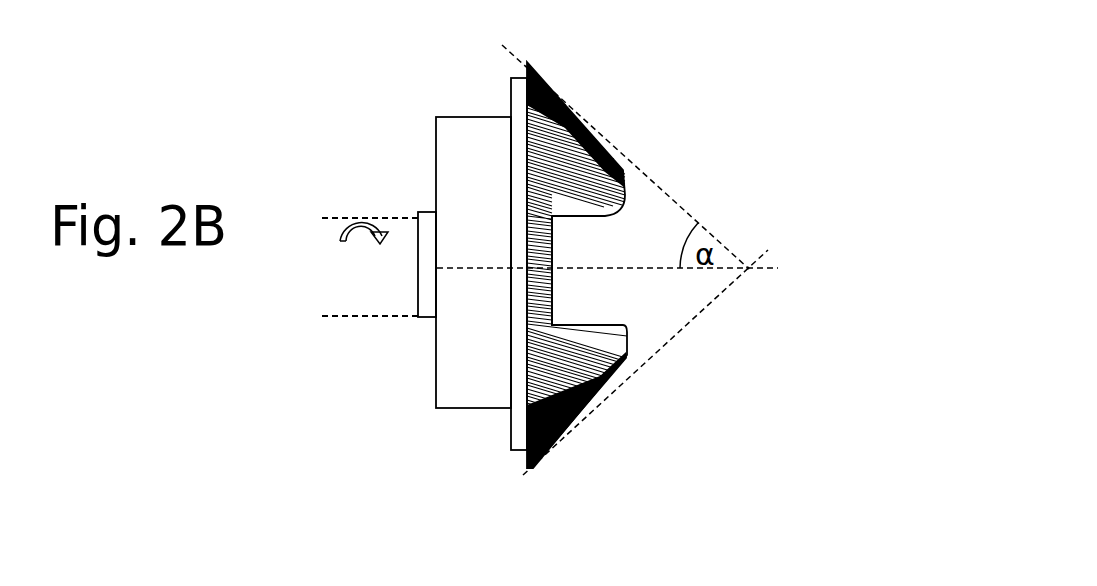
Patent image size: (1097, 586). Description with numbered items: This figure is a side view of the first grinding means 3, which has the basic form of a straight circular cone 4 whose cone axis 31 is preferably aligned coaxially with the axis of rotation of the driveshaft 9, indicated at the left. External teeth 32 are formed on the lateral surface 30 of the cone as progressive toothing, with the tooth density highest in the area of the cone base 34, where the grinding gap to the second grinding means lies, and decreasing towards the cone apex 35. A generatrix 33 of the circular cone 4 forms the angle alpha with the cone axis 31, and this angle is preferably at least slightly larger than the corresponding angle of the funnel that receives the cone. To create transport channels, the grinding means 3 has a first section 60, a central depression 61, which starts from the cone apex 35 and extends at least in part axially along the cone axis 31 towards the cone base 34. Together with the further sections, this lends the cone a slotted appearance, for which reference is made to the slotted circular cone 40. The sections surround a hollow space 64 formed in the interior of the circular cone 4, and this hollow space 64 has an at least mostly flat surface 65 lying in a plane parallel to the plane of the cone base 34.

The first grinding means 3 is at (414, 317).
The straight circular cone 4 is at (414, 317).
The slotted circular cone 40 is at (441, 455).
The driveshaft 9 is at (367, 297).
The flat surface 65 is at (520, 298).
The lateral surface 30 is at (641, 268).
The external teeth 32 is at (600, 387).
The hollow space 64 is at (585, 248).
The first section 60 is at (664, 209).
The central depression 61 is at (607, 248).
The generatrix 33 is at (605, 149).
The cone base 34 is at (523, 465).
The cone axis 31 is at (630, 276).
The cone apex 35 is at (750, 267).